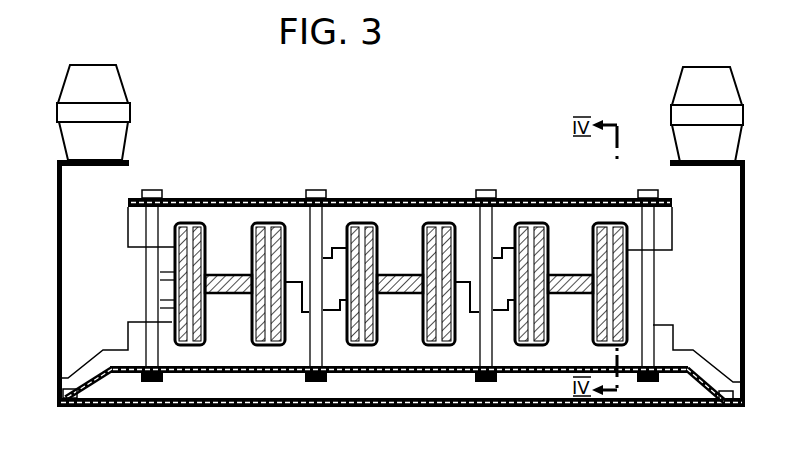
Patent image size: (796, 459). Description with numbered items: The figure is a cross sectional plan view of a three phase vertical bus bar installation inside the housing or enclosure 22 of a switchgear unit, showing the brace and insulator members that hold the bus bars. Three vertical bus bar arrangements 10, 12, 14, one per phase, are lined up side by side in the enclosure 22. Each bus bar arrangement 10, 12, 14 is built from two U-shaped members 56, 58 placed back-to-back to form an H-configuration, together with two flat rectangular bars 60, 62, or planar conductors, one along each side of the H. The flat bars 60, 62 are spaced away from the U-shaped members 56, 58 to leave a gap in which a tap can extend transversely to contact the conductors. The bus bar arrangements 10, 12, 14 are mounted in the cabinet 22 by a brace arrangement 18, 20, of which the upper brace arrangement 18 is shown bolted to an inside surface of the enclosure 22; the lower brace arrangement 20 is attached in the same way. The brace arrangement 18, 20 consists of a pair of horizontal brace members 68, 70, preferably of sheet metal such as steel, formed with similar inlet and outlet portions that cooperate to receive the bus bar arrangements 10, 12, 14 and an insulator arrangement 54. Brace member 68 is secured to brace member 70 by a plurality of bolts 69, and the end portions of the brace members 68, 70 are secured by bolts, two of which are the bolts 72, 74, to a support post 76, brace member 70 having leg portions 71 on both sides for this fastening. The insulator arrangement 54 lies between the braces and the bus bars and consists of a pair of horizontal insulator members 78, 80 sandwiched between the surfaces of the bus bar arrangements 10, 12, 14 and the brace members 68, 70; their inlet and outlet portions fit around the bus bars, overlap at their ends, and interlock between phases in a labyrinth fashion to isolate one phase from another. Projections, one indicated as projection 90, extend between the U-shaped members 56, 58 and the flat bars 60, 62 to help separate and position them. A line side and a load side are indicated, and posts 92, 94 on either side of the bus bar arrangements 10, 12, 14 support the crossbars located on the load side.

The bus bar arrangement 10 is at (567, 248).
The bus bar arrangement 12 is at (356, 224).
The bus bar arrangement 14 is at (226, 258).
The brace arrangement 18 is at (488, 150).
The brace arrangement 20 is at (400, 268).
The housing or enclosure 22 is at (57, 268).
The insulator arrangement 54 is at (548, 225).
The U-shaped member 56 is at (206, 250).
The U-shaped member 58 is at (206, 322).
The flat rectangular bar 60 is at (272, 223).
The flat rectangular bar 62 is at (206, 258).
The brace member 68 is at (334, 204).
The bolt 69 is at (153, 189).
The brace member 70 is at (336, 352).
The leg portion 71 is at (103, 349).
The bolt 72 is at (728, 402).
The bolt 74 is at (70, 399).
The support post 76 is at (166, 374).
The insulator member 78 is at (172, 273).
The insulator member 80 is at (172, 305).
The projection 90 is at (438, 224).
The post 92 is at (683, 72).
The post 94 is at (118, 70).